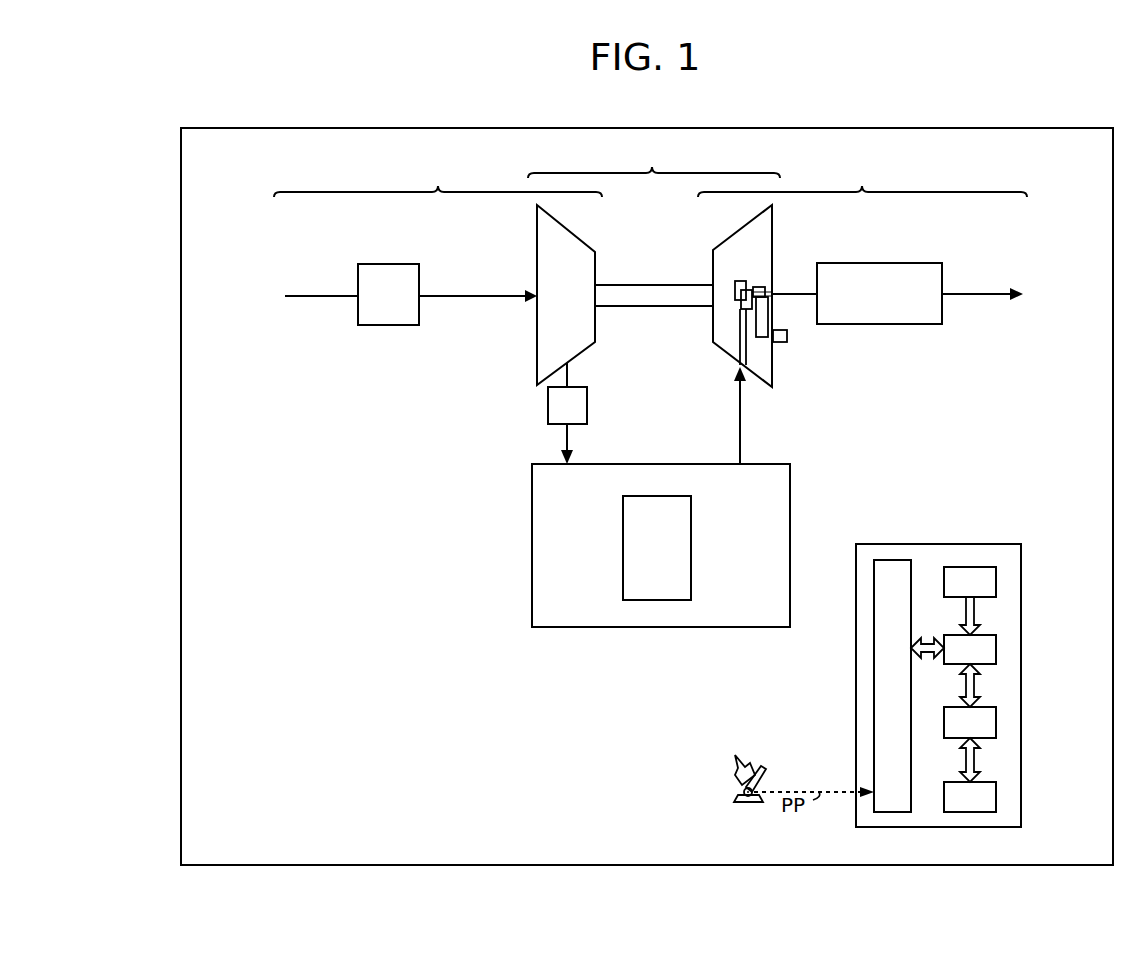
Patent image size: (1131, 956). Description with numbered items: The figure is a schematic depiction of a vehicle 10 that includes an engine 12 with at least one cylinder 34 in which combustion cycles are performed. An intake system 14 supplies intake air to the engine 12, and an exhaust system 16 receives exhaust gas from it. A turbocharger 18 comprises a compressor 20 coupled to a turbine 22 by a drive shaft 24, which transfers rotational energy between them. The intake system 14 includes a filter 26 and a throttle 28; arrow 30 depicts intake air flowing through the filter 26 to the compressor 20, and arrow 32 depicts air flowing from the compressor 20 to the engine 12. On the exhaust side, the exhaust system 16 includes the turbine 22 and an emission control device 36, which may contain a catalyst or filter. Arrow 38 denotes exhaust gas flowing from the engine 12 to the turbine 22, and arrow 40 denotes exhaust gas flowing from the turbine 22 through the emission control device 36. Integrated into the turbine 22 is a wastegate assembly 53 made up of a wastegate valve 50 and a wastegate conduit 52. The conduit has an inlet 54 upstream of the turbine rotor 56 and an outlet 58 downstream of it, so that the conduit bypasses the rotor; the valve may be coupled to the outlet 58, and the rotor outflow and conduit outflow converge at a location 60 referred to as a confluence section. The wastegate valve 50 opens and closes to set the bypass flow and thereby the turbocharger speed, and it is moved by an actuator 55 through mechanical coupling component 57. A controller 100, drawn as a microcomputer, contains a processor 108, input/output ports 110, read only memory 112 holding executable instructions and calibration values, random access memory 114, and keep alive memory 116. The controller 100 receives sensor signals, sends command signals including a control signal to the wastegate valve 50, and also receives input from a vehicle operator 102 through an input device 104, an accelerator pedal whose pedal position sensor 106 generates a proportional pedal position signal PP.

The vehicle 10 is at (215, 128).
The engine 12 is at (532, 474).
The intake system 14 is at (438, 180).
The exhaust system 16 is at (862, 180).
The turbocharger 18 is at (654, 161).
The compressor 20 is at (560, 228).
The turbine 22 is at (752, 227).
The drive shaft 24 is at (670, 285).
The filter 26 is at (392, 264).
The throttle 28 is at (548, 408).
The arrow 30 is at (322, 296).
The arrow 32 is at (565, 438).
The cylinder 34 is at (623, 508).
The emission control device 36 is at (851, 263).
The arrow 38 is at (738, 408).
The arrow 40 is at (990, 294).
The wastegate valve 50 is at (755, 287).
The wastegate conduit 52 is at (741, 314).
The wastegate assembly 53 is at (784, 255).
The inlet 54 is at (738, 370).
The actuator 55 is at (782, 343).
The turbine rotor 56 is at (741, 281).
The mechanical coupling component 57 is at (763, 340).
The outlet 58 is at (765, 291).
The location 60 is at (768, 297).
The controller 100 is at (1014, 544).
The vehicle operator 102 is at (736, 768).
The input device 104 is at (762, 783).
The pedal position sensor 106 is at (744, 792).
The processor 108 is at (996, 650).
The input/output ports 110 is at (911, 567).
The read only memory 112 is at (996, 580).
The random access memory 114 is at (996, 722).
The keep alive memory 116 is at (996, 796).